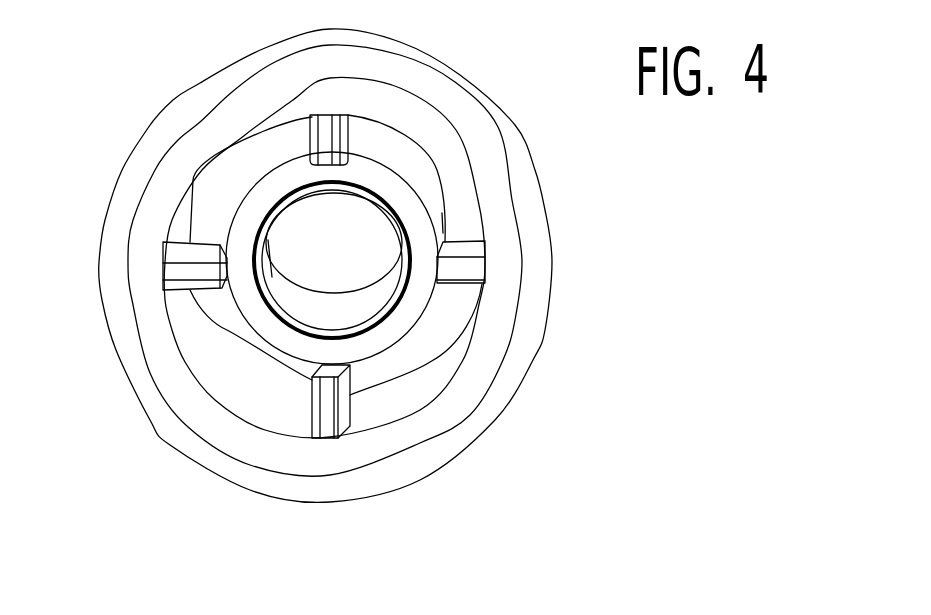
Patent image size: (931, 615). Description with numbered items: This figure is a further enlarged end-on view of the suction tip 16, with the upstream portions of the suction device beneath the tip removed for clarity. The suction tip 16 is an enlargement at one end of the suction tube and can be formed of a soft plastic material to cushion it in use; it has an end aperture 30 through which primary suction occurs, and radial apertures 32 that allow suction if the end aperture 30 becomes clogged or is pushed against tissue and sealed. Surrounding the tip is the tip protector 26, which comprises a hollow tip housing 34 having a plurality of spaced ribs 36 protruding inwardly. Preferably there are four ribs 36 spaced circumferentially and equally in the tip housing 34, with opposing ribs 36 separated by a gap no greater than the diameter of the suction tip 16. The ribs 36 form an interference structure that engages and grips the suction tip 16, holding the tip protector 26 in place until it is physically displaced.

The suction tip 16 is at (412, 303).
The tip protector 26 is at (558, 262).
The end aperture 30 is at (348, 318).
The radial apertures 32 is at (270, 250).
The tip housing 34 is at (233, 385).
The ribs 36 is at (325, 137).